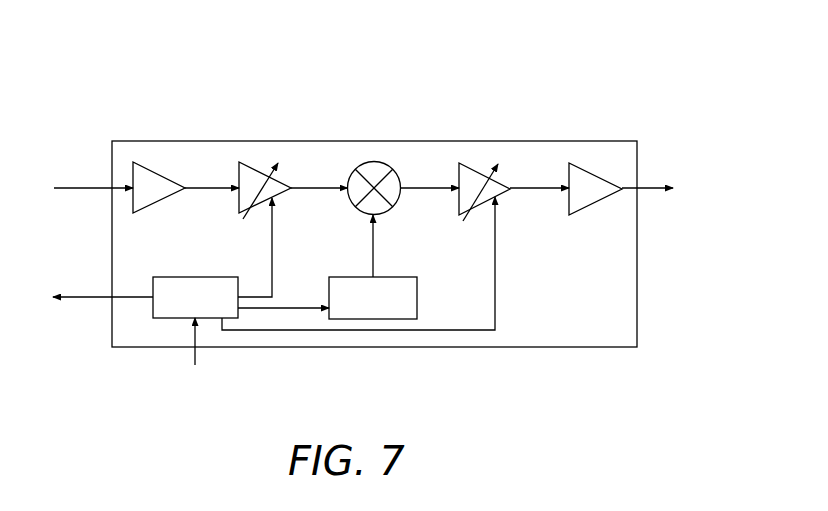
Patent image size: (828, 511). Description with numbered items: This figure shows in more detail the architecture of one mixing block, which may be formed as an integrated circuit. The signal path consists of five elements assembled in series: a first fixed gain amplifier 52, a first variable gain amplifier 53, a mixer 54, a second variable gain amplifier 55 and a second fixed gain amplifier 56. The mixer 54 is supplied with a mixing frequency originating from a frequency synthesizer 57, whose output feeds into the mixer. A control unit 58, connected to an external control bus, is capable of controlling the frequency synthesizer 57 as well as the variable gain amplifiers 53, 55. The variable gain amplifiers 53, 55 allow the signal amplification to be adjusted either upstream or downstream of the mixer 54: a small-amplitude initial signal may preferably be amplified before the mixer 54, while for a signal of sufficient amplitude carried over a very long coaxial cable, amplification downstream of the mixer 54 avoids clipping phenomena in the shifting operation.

The first fixed gain amplifier 52 is at (157, 171).
The first variable gain amplifier 53 is at (250, 170).
The mixer 54 is at (370, 162).
The second variable gain amplifier 55 is at (483, 170).
The second fixed gain amplifier 56 is at (590, 172).
The frequency synthesizer 57 is at (378, 319).
The control unit 58 is at (167, 320).